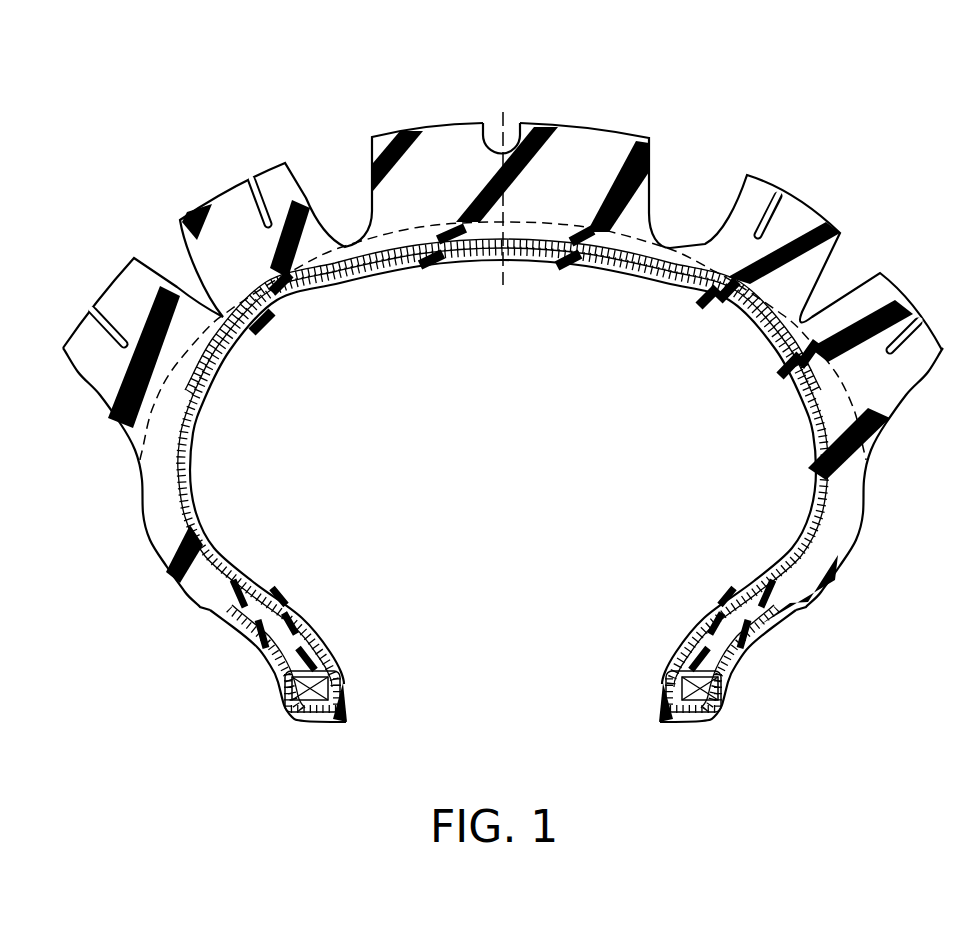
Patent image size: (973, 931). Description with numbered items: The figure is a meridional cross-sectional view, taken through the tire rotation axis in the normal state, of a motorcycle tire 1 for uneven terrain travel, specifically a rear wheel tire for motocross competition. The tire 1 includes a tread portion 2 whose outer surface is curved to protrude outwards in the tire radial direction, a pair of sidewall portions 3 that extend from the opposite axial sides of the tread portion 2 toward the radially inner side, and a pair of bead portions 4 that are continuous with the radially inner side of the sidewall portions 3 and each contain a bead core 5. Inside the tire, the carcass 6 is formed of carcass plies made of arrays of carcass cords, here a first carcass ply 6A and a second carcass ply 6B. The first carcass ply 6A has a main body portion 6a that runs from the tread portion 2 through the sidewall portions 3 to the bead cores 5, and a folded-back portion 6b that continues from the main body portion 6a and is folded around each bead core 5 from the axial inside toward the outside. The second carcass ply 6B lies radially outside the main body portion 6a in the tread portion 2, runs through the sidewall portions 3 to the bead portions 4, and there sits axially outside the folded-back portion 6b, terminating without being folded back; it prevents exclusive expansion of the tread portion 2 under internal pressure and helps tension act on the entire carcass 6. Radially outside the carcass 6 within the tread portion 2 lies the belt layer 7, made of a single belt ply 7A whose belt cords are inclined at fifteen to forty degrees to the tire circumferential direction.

The motorcycle tire 1 is at (836, 140).
The tread portion 2 is at (428, 120).
The sidewall portions 3 is at (128, 518).
The bead portions 4 is at (250, 670).
The bead cores 5 is at (690, 688).
The carcass 6 is at (503, 479).
The first carcass ply 6A is at (503, 481).
The main body portion 6a is at (808, 530).
The folded-back portion 6b is at (503, 644).
The second carcass ply 6B is at (823, 493).
The belt layer 7 is at (503, 315).
The belt ply 7A is at (533, 246).